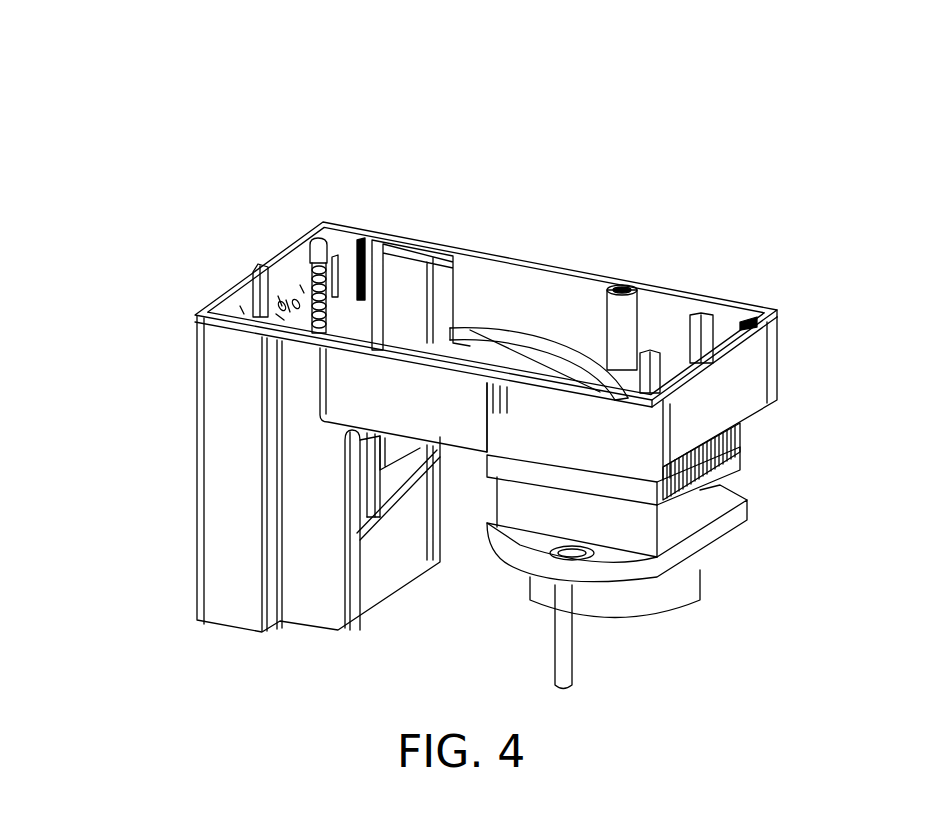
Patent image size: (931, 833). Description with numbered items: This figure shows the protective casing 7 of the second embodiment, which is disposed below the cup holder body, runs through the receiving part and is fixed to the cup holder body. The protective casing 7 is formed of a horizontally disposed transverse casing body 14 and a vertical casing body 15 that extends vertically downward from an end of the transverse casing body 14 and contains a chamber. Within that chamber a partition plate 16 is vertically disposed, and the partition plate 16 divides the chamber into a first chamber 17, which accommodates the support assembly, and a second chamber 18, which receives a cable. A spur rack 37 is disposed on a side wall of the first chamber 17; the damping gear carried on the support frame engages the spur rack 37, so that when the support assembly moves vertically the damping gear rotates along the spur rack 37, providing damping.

The protective casing 7 is at (323, 175).
The transverse casing body 14 is at (230, 446).
The vertical casing body 15 is at (735, 378).
The partition plate 16 is at (352, 318).
The first chamber 17 is at (297, 317).
The second chamber 18 is at (403, 465).
The spur rack 37 is at (333, 290).